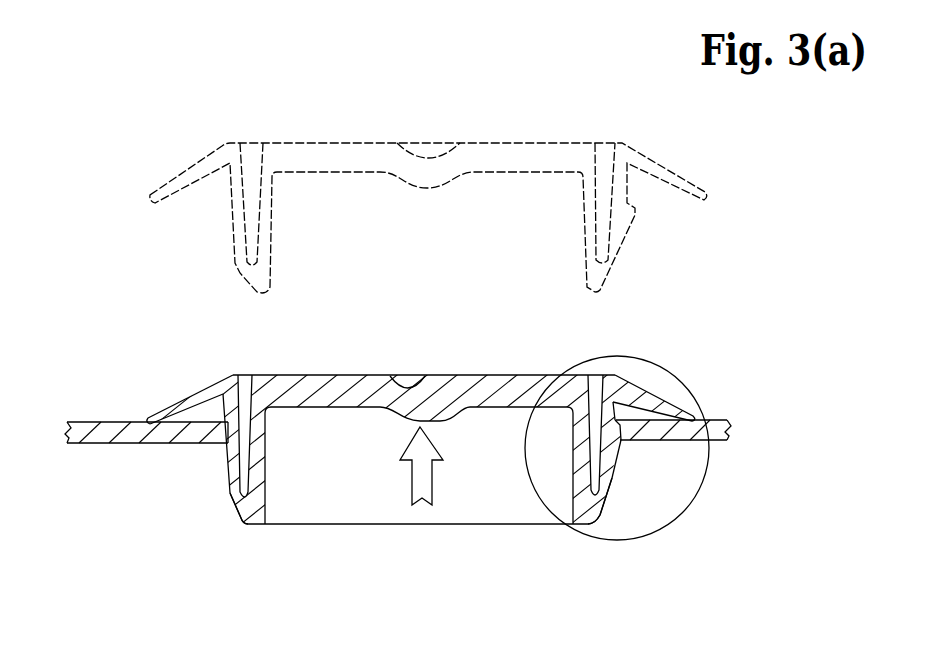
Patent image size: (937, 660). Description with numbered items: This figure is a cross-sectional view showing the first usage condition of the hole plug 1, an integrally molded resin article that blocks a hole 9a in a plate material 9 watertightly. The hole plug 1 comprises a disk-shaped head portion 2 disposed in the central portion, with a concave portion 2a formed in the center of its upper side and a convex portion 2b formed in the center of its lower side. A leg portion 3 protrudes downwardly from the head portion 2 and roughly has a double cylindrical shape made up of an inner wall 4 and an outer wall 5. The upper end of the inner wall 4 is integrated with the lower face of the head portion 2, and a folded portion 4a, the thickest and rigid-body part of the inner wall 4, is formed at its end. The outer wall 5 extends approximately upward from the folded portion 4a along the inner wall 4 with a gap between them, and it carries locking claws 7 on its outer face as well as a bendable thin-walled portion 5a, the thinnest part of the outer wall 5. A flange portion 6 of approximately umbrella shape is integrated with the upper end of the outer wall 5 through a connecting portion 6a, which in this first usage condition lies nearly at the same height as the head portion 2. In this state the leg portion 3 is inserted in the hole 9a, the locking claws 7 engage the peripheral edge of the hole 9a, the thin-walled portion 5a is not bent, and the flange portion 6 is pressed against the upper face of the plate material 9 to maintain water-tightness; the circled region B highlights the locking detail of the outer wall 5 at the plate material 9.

The hole plug 1 is at (541, 142).
The head portion 2 is at (305, 375).
The concave portion 2a is at (422, 378).
The convex portion 2b is at (443, 415).
The leg portion 3 is at (230, 513).
The inner wall 4 is at (263, 477).
The folded portion 4a is at (241, 527).
The outer wall 5 is at (234, 444).
The thin-walled portion 5a is at (219, 453).
The flange portion 6 is at (153, 400).
The connecting portion 6a is at (615, 376).
The locking claw 7 is at (622, 442).
The plate material 9 is at (73, 421).
The hole 9a is at (227, 443).
The detail region B is at (688, 384).